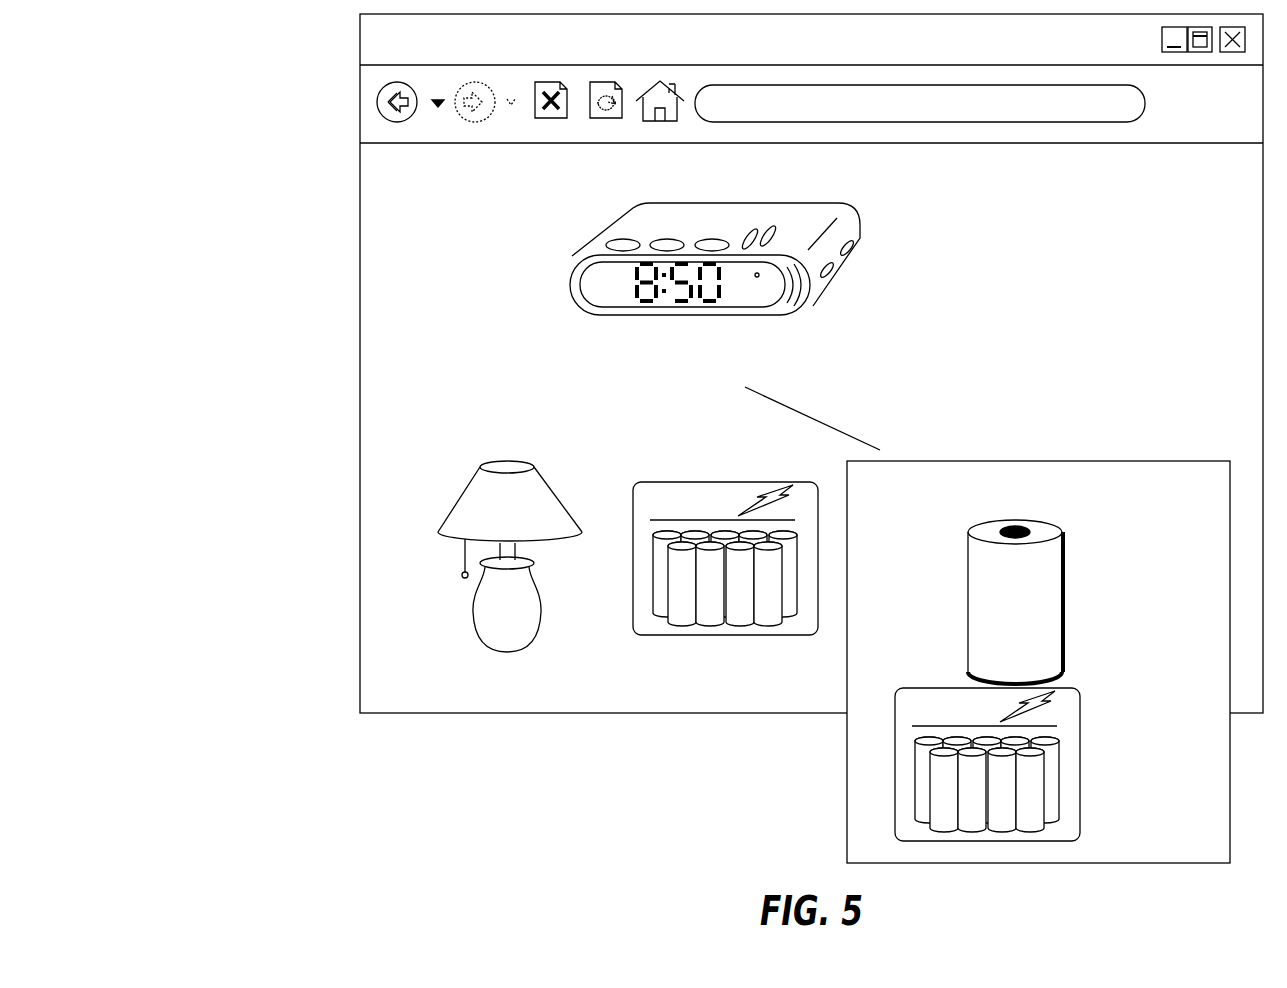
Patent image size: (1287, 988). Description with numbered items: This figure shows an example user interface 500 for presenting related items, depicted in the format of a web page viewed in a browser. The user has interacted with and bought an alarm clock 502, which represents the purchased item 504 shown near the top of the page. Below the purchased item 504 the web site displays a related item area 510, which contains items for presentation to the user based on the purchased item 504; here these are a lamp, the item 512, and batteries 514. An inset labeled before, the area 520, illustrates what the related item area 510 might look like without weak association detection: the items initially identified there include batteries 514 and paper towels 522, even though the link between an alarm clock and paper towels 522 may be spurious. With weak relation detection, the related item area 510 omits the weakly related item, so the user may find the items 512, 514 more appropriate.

The user interface 500 is at (166, 78).
The alarm clock 502 is at (345, 118).
The purchased item 504 is at (850, 284).
The related item area 510 is at (404, 358).
The item 512 is at (477, 669).
The batteries 514 is at (657, 655).
The area 520 is at (1164, 448).
The paper towels 522 is at (1084, 586).